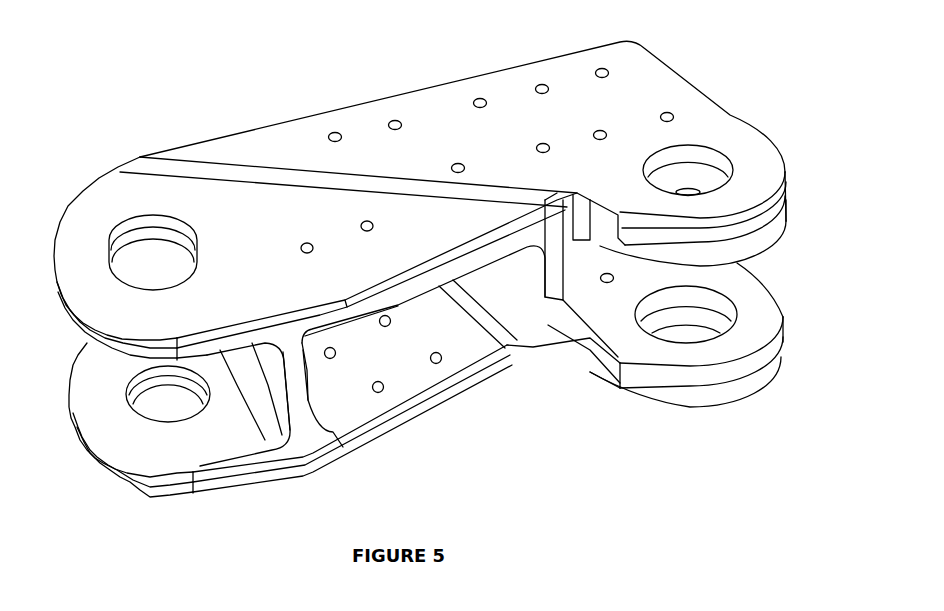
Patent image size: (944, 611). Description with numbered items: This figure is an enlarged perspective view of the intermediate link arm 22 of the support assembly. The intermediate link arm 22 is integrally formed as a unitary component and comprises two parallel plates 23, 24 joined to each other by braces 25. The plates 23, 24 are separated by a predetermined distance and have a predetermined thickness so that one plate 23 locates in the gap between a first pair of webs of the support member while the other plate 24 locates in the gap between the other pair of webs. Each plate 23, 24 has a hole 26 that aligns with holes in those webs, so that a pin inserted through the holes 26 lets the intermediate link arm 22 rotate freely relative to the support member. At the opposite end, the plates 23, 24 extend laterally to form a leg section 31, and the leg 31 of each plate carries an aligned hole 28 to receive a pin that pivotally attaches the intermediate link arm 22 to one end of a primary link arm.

The intermediate link arm 22 is at (134, 93).
The plate 23 is at (275, 287).
The plate 24 is at (447, 340).
The braces 25 is at (302, 397).
The hole 26 is at (125, 247).
The hole 28 is at (708, 148).
The leg section 31 is at (828, 226).